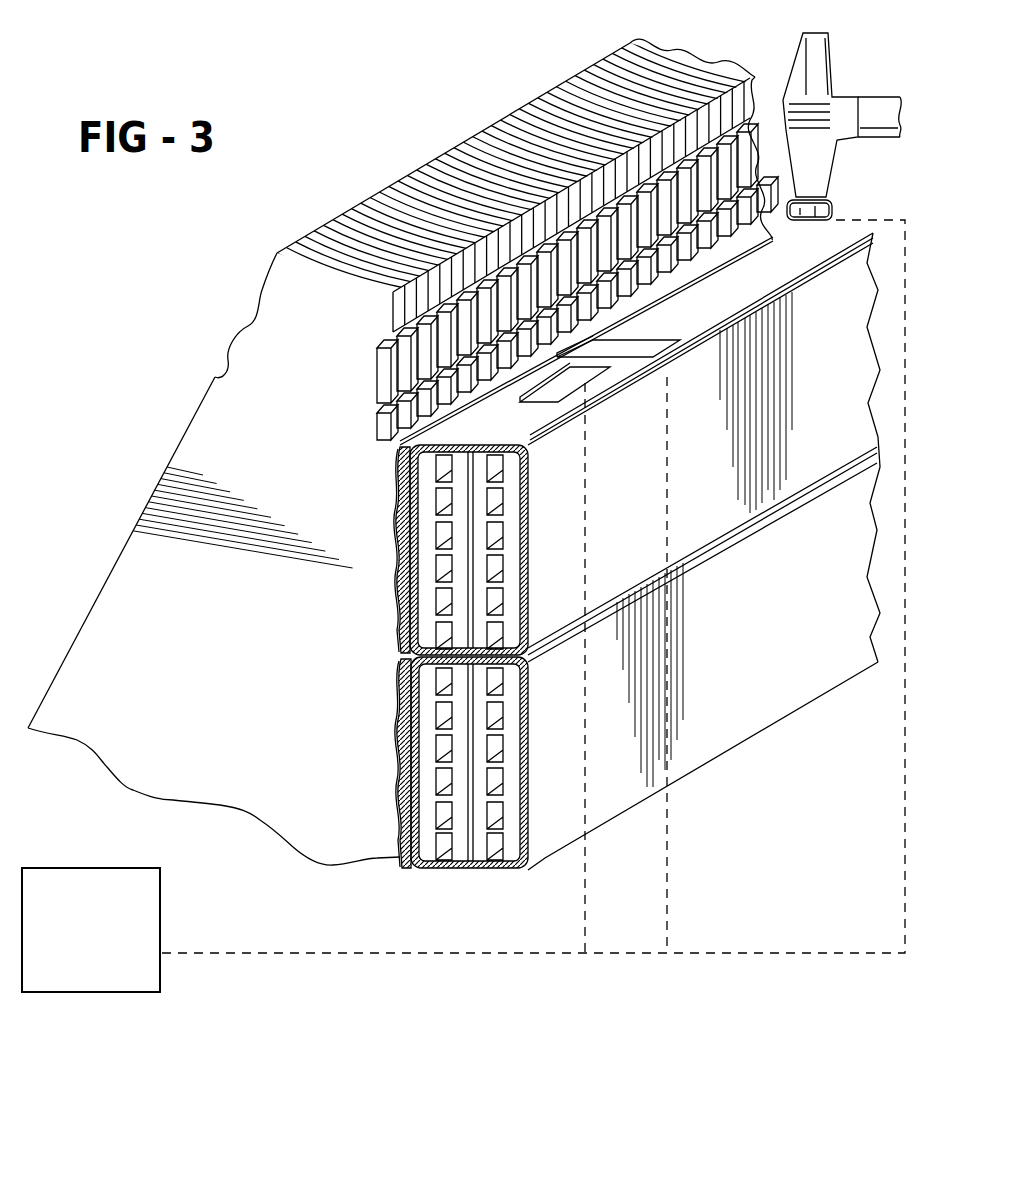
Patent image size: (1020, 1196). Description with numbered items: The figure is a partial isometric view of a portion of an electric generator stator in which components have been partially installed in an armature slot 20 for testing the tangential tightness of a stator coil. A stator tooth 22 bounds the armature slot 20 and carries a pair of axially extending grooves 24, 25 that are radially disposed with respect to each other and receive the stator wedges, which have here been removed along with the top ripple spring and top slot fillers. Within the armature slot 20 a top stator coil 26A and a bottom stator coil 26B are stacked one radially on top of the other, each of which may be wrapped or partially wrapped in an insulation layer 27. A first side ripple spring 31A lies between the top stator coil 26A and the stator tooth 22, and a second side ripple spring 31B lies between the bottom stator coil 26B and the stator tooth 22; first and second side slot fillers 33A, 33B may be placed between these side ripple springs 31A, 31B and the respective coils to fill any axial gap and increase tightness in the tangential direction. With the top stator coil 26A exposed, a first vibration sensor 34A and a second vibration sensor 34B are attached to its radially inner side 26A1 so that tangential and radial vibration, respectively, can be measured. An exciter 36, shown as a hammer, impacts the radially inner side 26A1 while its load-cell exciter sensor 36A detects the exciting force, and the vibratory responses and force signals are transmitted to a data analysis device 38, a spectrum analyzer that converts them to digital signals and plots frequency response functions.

The armature slot 20 is at (398, 606).
The stator tooth 22 is at (135, 600).
The axially extending groove 24 is at (380, 353).
The axially extending groove 25 is at (380, 423).
The top stator coil 26A is at (581, 447).
The radially inner side 26A1 is at (765, 275).
The bottom stator coil 26B is at (585, 716).
The insulation layer 27 is at (528, 588).
The first side ripple spring 31A is at (397, 525).
The second side ripple spring 31B is at (397, 760).
The first side slot filler 33A is at (397, 490).
The second side slot filler 33B is at (397, 703).
The first vibration sensor 34A is at (534, 403).
The second vibration sensor 34B is at (630, 345).
The exciter 36 is at (842, 112).
The exciter sensor 36A is at (835, 210).
The data analysis device 38 is at (108, 960).